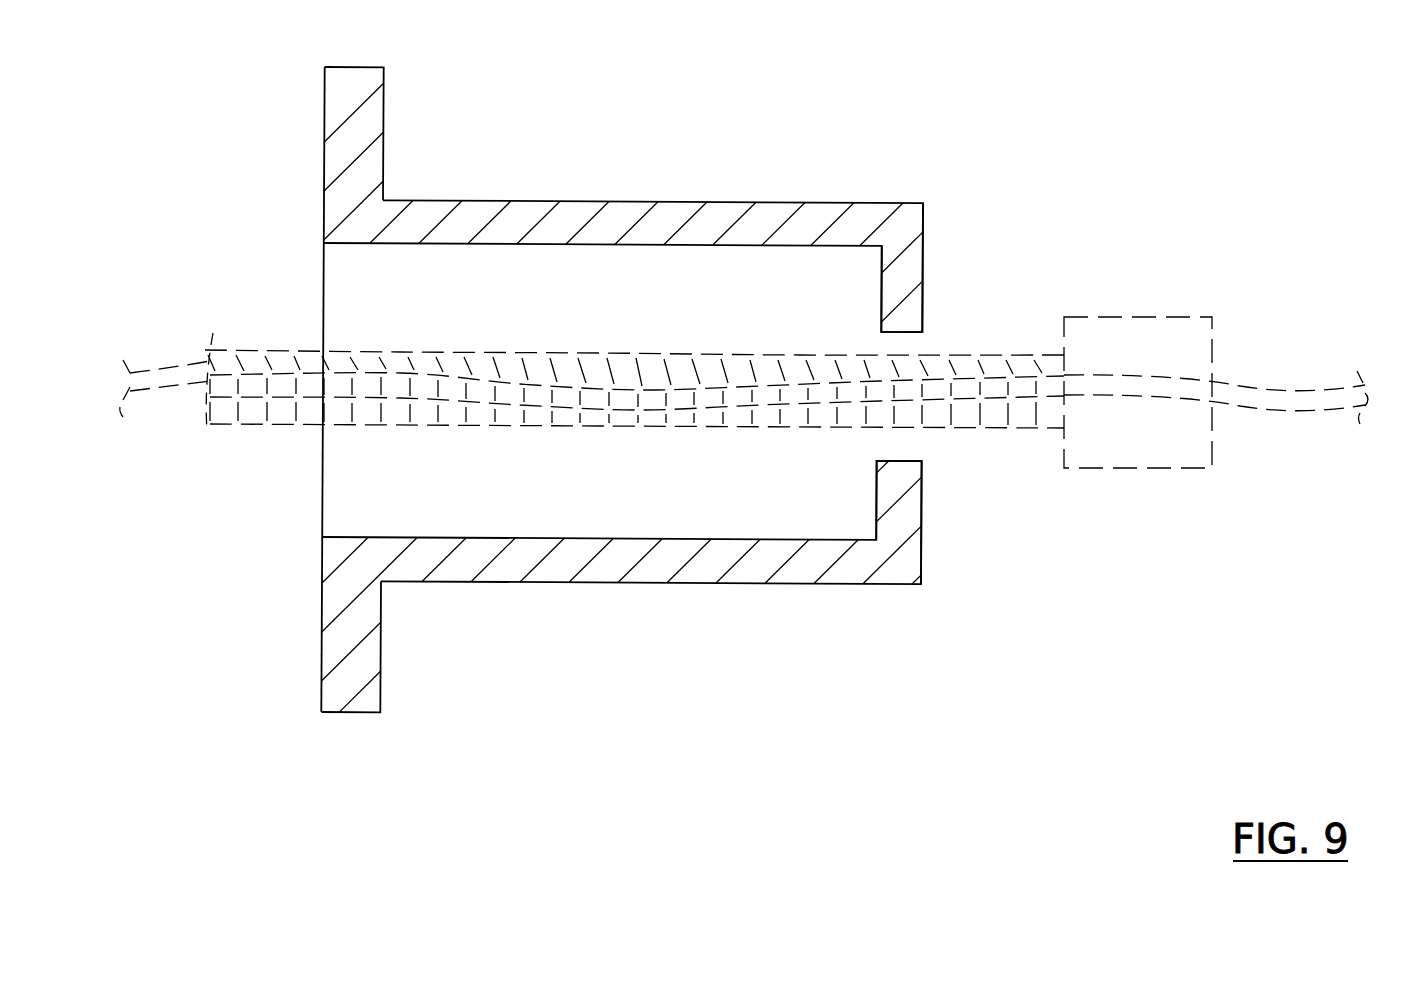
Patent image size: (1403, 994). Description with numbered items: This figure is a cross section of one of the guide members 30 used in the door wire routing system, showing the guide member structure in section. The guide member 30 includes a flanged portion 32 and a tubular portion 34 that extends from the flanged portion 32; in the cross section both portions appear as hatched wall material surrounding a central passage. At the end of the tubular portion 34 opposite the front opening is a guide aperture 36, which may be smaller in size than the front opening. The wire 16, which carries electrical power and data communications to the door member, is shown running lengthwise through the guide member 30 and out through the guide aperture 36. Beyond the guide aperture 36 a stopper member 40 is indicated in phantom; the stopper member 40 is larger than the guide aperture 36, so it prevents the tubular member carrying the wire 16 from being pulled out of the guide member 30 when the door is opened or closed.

The wire 16 is at (273, 367).
The guide member 30 is at (735, 397).
The flanged portion 32 is at (367, 122).
The tubular portion 34 is at (793, 573).
The guide aperture 36 is at (923, 438).
The stopper member 40 is at (1105, 328).